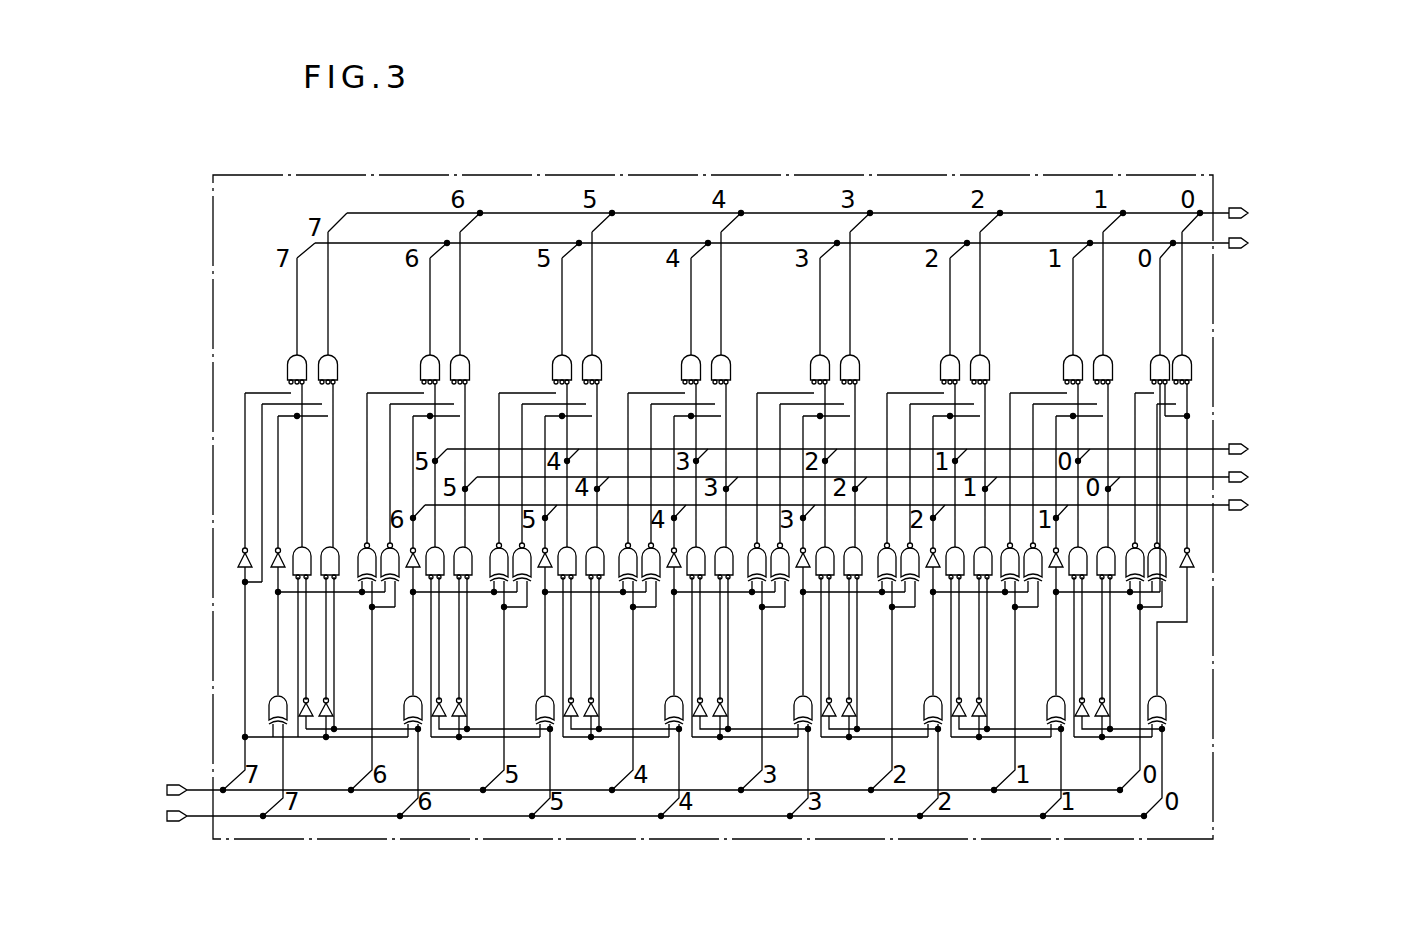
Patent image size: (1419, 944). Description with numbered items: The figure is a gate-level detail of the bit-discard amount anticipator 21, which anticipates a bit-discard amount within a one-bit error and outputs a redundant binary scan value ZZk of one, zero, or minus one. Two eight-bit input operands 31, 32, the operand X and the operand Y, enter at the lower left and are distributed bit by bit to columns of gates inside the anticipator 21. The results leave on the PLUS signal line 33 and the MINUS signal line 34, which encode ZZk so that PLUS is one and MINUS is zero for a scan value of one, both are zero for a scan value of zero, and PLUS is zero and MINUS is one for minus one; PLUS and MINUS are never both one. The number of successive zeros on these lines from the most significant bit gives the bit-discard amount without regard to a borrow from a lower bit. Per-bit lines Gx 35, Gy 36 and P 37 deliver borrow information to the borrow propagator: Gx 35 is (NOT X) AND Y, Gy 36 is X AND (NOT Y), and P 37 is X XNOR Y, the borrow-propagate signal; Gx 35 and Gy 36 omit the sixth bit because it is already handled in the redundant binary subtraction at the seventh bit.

The bit-discard amount anticipator 21 is at (1068, 175).
The input operand X 31 is at (124, 750).
The input operand Y 32 is at (88, 838).
The PLUS signal line 33 is at (1300, 262).
The MINUS signal line 34 is at (1316, 186).
The Gx bit line 35 is at (1313, 436).
The Gy bit line 36 is at (1368, 477).
The P bit line 37 is at (1315, 520).